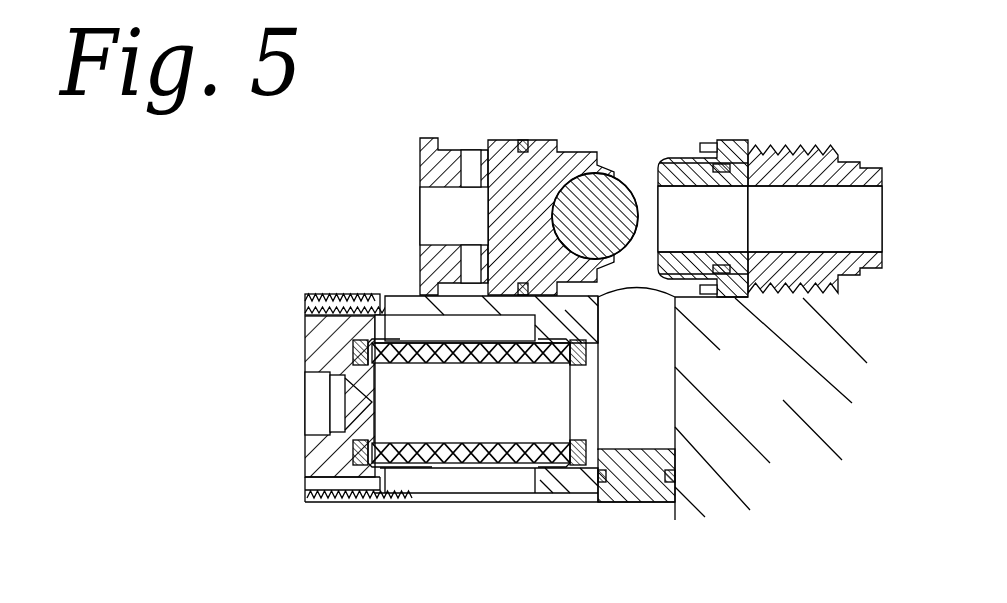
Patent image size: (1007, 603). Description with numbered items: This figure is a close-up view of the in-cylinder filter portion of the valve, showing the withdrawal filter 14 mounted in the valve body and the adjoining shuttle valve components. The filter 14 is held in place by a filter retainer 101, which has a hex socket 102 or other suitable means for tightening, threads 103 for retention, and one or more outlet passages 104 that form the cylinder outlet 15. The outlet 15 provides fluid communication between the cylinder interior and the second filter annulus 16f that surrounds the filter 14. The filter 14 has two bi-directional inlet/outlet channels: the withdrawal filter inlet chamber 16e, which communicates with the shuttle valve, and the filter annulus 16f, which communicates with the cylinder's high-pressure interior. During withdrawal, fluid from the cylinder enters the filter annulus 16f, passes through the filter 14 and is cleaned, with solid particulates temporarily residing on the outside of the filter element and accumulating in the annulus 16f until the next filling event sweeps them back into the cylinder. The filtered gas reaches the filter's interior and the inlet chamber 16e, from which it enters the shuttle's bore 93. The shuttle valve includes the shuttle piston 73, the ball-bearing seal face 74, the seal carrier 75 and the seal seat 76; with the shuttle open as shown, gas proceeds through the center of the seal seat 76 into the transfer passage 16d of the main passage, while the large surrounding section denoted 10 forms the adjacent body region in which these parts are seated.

The body 10 is at (777, 402).
The withdrawal filter 14 is at (419, 462).
The cylinder outlet 15 is at (318, 529).
The outlet passages 104 is at (313, 487).
The transfer passage 16d is at (830, 236).
The withdrawal filter inlet chamber 16e is at (654, 417).
The second filter annulus 16f is at (463, 475).
The shuttle piston 73 is at (530, 180).
The ball-bearing seal face 74 is at (645, 187).
The shuttle's bore 93 is at (597, 200).
The seal carrier 75 is at (688, 148).
The seal seat 76 is at (748, 152).
The filter retainer 101 is at (313, 357).
The hex socket 102 is at (320, 374).
The threads 103 is at (305, 328).